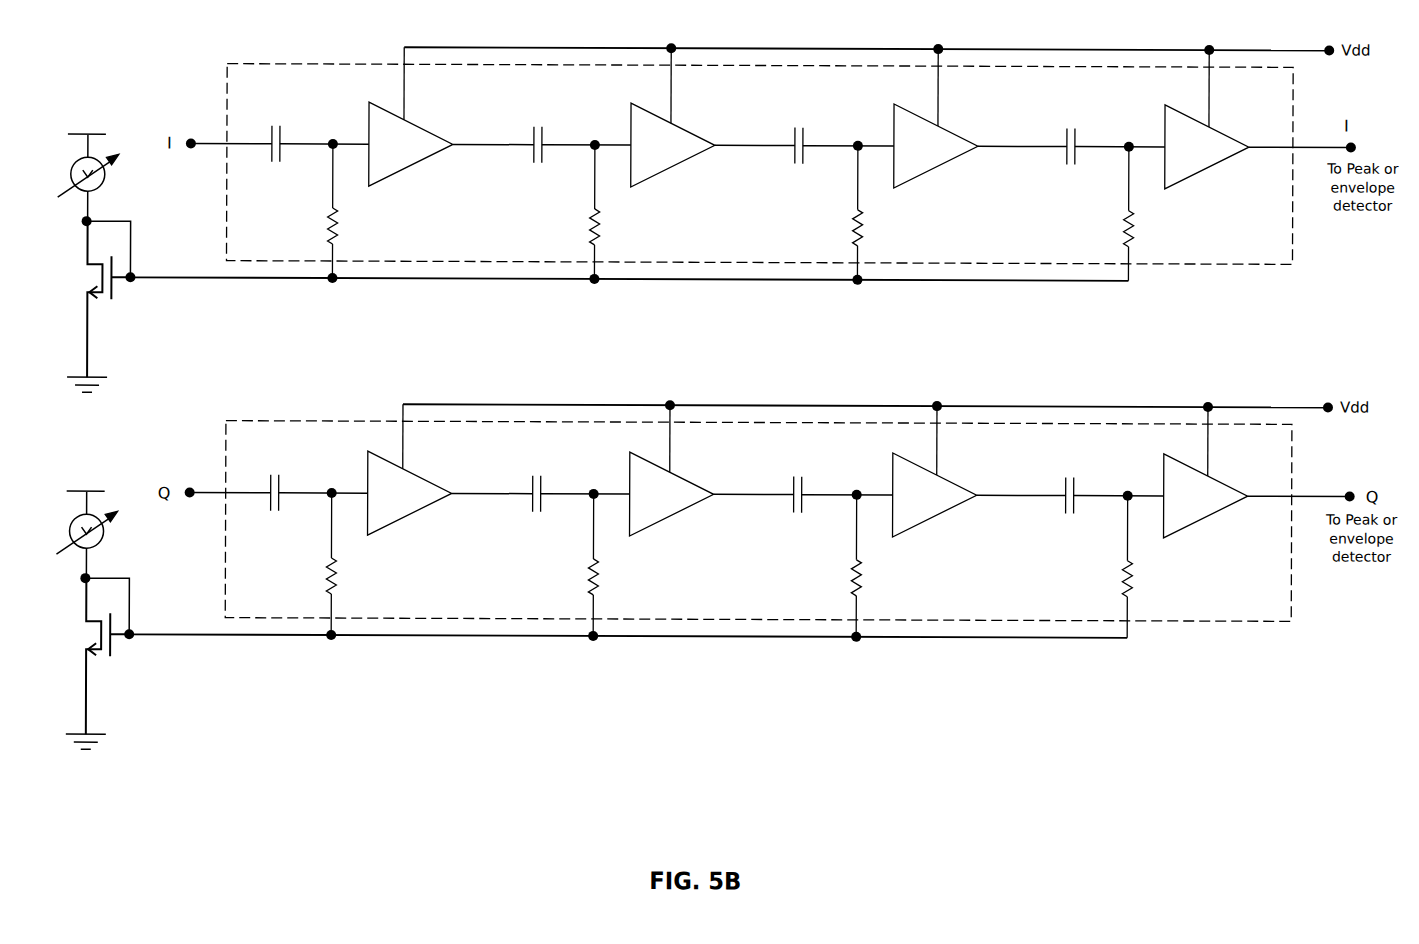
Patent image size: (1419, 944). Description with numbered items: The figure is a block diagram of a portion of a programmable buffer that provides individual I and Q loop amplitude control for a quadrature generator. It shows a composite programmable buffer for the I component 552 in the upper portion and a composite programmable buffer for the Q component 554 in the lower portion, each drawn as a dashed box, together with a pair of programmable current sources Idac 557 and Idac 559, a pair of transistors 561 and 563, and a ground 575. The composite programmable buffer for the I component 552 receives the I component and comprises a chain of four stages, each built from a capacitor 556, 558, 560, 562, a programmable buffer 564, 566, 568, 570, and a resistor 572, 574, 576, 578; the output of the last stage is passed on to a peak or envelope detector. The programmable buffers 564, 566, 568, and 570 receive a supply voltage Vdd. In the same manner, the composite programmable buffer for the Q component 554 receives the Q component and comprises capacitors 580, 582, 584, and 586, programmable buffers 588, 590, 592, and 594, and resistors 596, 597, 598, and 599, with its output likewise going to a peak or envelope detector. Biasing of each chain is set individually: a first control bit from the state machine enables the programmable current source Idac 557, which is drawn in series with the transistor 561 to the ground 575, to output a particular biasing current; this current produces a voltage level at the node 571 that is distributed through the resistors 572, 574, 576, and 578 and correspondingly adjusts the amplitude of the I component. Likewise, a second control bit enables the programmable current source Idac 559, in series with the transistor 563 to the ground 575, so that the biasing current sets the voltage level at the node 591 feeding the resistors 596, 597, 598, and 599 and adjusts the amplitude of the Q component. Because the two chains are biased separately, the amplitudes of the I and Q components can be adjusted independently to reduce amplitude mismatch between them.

The composite programmable buffer for the I component 552 is at (1284, 259).
The composite programmable buffer for the Q component 554 is at (1286, 615).
The capacitor 556 is at (279, 126).
The capacitor 558 is at (545, 130).
The capacitor 560 is at (806, 131).
The capacitor 562 is at (1078, 132).
The programmable buffer 564 is at (416, 126).
The programmable buffer 566 is at (688, 131).
The programmable buffer 568 is at (956, 133).
The programmable buffer 570 is at (1222, 131).
The resistor 572 is at (336, 222).
The resistor 574 is at (598, 224).
The resistor 576 is at (860, 226).
The resistor 578 is at (1132, 228).
The programmable current source Idac 557 is at (101, 192).
The transistor 561 is at (111, 300).
The node 571 is at (134, 275).
The ground (GND) 575 is at (99, 379).
The capacitor 580 is at (278, 477).
The capacitor 582 is at (543, 478).
The capacitor 584 is at (802, 478).
The capacitor 586 is at (1076, 478).
The programmable buffer 588 is at (416, 476).
The programmable buffer 590 is at (687, 480).
The programmable buffer 592 is at (946, 478).
The programmable buffer 594 is at (1218, 479).
The resistor 596 is at (335, 592).
The resistor 597 is at (597, 590).
The resistor 598 is at (858, 591).
The resistor 599 is at (1132, 590).
The programmable current source Idac 559 is at (101, 549).
The transistor 563 is at (111, 657).
The node 591 is at (134, 632).